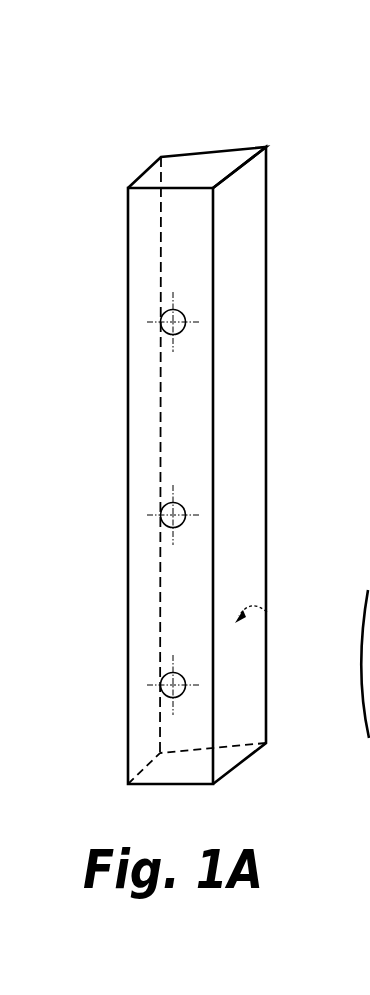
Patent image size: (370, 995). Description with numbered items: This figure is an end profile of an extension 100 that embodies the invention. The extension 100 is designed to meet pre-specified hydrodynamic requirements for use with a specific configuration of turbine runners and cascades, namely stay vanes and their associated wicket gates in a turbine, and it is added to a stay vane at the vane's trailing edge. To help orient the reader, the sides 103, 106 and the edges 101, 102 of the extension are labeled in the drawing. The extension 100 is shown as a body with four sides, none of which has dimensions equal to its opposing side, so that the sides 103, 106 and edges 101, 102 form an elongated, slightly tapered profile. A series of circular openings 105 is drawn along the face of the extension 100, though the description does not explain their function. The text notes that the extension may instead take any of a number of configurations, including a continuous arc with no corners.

The extension 100 is at (203, 431).
The edge of the extension 101 is at (160, 242).
The edge of the extension 102 is at (266, 215).
The side of the extension 103 is at (247, 435).
The holes 105 is at (162, 521).
The side of the extension 106 is at (267, 613).